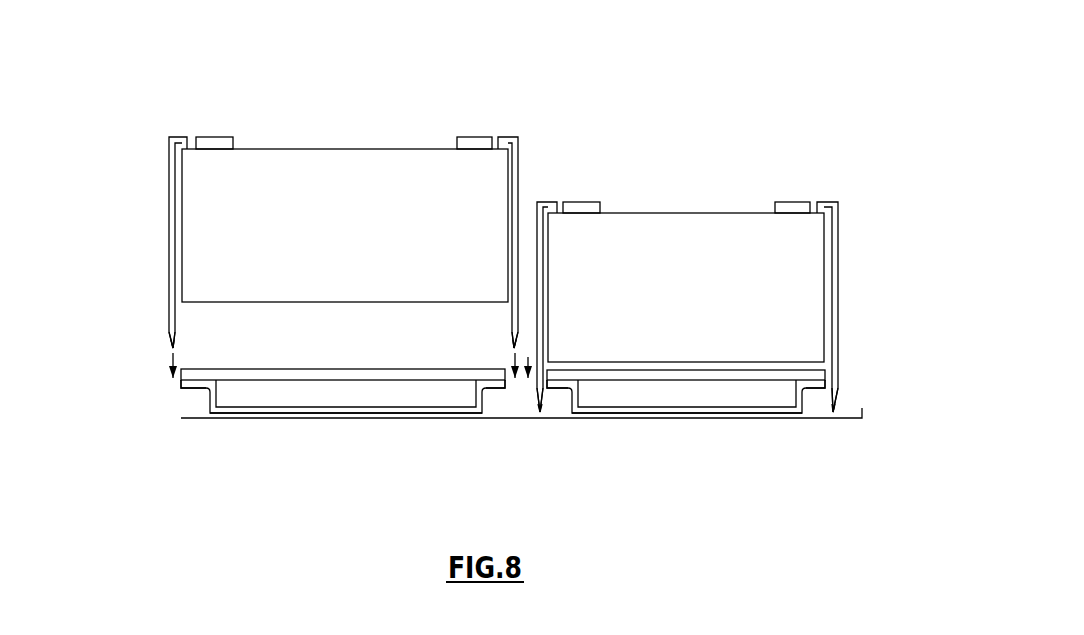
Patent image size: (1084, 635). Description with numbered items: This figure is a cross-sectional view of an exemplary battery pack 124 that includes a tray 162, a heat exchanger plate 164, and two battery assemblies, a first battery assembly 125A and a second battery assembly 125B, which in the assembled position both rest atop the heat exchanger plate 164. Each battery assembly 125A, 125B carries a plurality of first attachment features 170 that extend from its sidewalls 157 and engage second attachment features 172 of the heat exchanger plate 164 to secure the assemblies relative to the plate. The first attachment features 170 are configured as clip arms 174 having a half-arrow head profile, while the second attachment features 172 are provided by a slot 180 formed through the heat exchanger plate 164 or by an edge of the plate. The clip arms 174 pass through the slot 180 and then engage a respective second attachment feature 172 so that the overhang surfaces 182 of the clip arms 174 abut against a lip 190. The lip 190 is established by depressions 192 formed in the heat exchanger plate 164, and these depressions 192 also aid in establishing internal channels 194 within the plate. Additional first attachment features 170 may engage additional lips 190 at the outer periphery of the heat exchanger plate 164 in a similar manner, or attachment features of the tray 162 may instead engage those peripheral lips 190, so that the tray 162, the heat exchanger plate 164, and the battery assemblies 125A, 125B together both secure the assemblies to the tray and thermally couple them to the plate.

The battery pack 124 is at (622, 155).
The first battery assembly 125A is at (306, 133).
The second battery assembly 125B is at (719, 200).
The sidewall 157 is at (169, 230).
The tray 162 is at (509, 422).
The heat exchanger plate 164 is at (175, 387).
The first attachment feature 170 is at (196, 346).
The second attachment feature 172 is at (186, 403).
The clip arm 174 is at (172, 342).
The slot 180 is at (528, 356).
The overhang surface 182 is at (186, 332).
The lip 190 is at (205, 388).
The depression 192 is at (207, 392).
The internal channel 194 is at (300, 395).